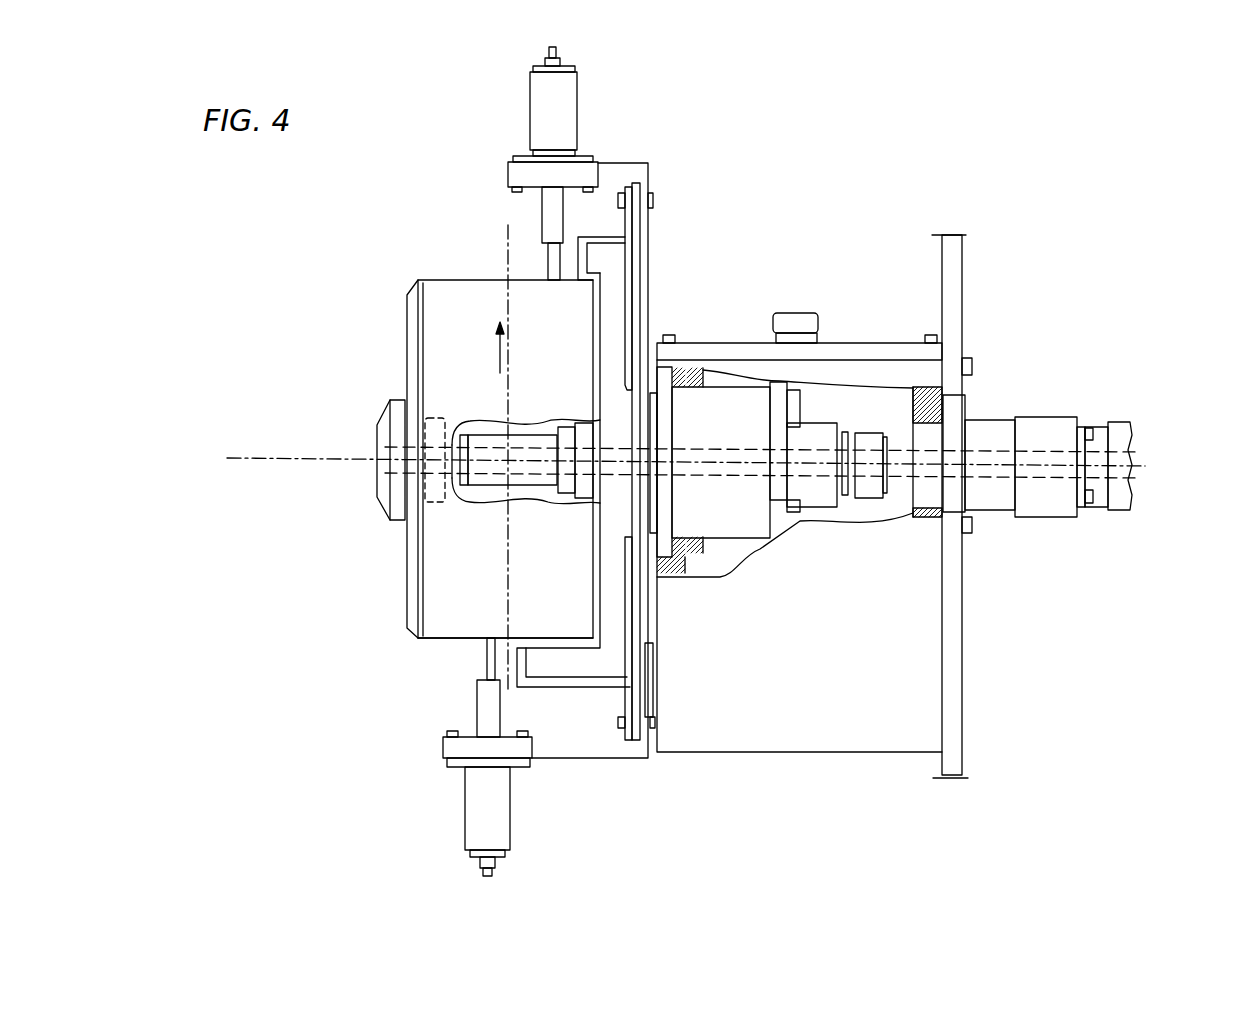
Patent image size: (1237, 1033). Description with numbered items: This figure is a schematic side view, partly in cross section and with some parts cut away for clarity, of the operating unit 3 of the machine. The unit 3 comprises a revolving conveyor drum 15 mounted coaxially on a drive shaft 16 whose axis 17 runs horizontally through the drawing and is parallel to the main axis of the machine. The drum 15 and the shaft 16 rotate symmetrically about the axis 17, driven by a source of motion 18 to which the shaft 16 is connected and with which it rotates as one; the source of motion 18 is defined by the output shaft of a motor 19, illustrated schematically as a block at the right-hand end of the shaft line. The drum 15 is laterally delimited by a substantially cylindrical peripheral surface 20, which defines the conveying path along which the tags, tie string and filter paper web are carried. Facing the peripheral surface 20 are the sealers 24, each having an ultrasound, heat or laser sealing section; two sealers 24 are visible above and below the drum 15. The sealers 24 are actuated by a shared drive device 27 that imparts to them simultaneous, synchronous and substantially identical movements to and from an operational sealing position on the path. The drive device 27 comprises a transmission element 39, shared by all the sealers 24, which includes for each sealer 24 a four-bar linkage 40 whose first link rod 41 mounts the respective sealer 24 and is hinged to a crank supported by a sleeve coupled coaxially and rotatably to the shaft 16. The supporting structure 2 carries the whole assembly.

The support pedestal / mounting plate 2 is at (952, 261).
The unit 3 is at (1128, 230).
The revolving conveyor drum 15 is at (445, 605).
The drive shaft 16 is at (710, 440).
The axis 17 is at (280, 455).
The source of motion 18 is at (985, 455).
The motor 19 is at (1040, 440).
The peripheral surface 20 is at (433, 645).
The sealer 24 is at (548, 112).
The drive device 27 is at (668, 146).
The transmission element 39 is at (660, 221).
The four-bar linkage 40 is at (657, 291).
The first link rod 41 is at (613, 178).